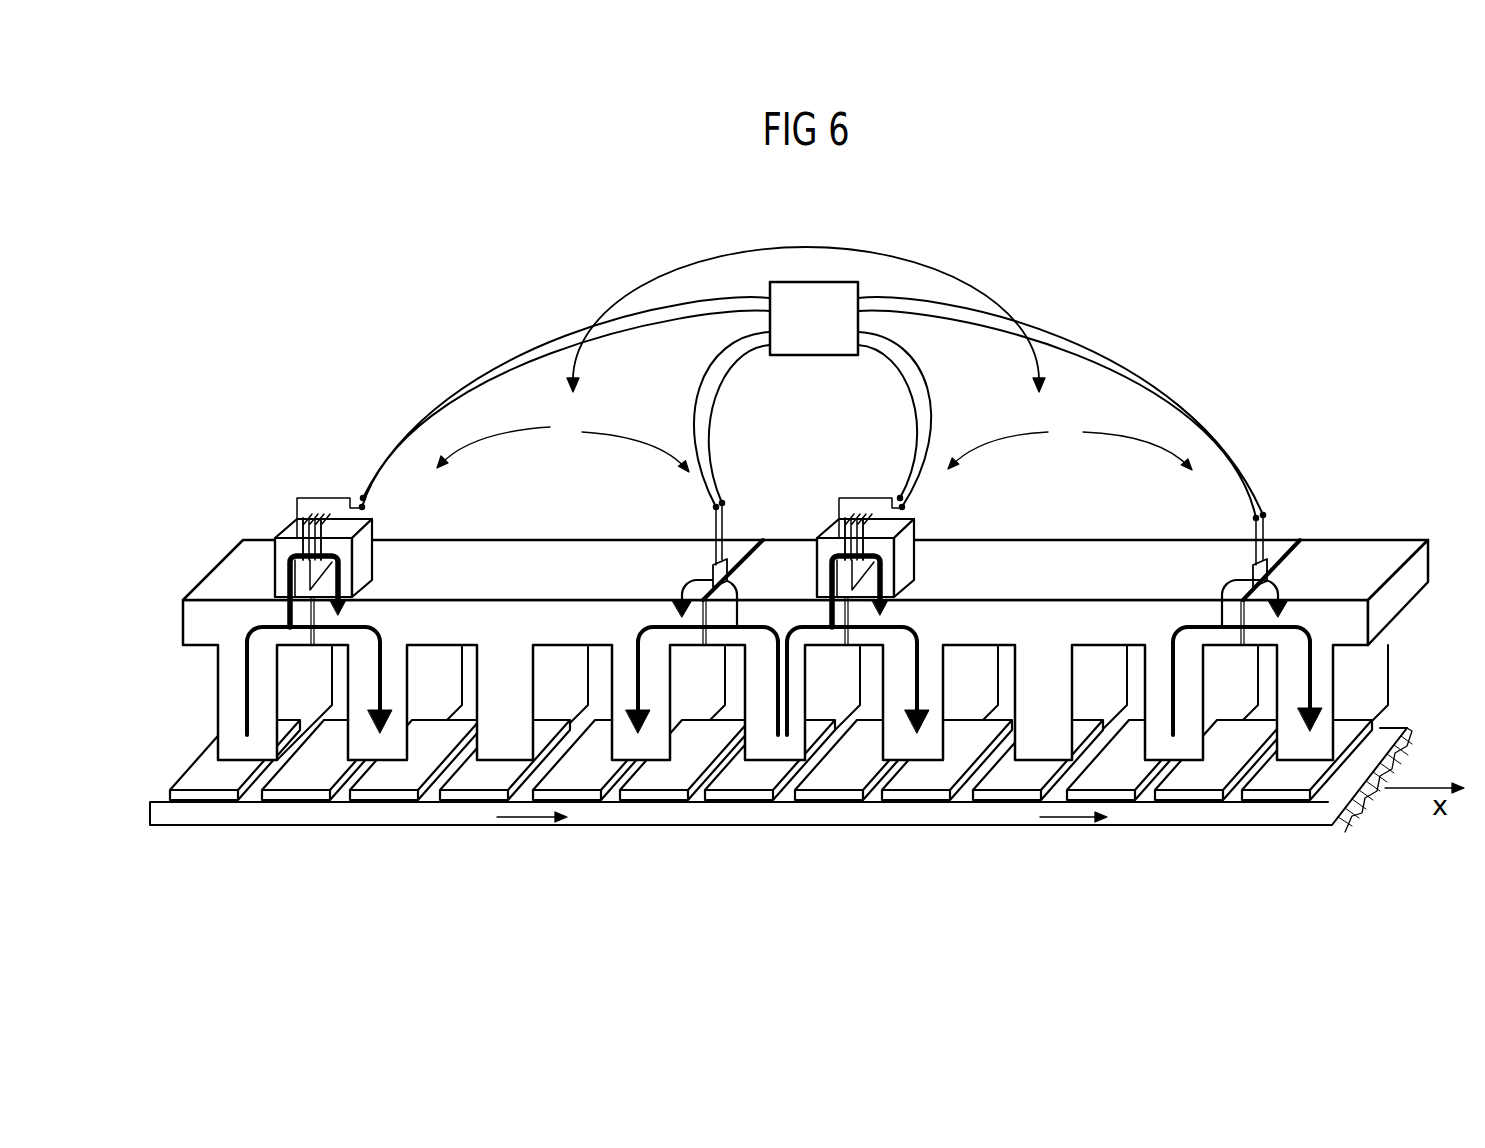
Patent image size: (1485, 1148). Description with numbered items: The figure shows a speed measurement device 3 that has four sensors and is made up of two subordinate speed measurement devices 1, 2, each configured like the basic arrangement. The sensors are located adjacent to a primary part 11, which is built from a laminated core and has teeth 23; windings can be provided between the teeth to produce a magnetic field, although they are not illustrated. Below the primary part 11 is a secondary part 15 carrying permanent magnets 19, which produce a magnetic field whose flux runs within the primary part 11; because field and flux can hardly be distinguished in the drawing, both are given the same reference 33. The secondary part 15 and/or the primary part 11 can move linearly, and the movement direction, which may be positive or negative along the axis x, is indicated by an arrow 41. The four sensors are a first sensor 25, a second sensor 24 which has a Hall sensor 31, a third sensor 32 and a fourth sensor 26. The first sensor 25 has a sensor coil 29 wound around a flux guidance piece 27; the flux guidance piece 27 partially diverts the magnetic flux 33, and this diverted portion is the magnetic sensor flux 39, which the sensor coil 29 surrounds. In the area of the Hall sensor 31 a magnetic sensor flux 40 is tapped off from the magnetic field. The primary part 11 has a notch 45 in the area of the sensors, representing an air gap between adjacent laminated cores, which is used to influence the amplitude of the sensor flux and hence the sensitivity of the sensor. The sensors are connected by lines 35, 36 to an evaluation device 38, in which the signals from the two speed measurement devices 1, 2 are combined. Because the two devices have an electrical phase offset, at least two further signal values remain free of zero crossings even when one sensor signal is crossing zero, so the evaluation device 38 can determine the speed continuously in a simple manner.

The speed measurement device 1 is at (552, 442).
The speed measurement device 2 is at (1055, 442).
The speed measurement device 3 is at (796, 262).
The primary part 11 is at (1384, 548).
The secondary part 15 is at (1348, 805).
The permanent magnets 19 is at (1282, 803).
The teeth 23 is at (1033, 753).
The second sensor 24 is at (742, 548).
The first sensor 25 is at (268, 492).
The fourth sensor 26 is at (813, 509).
The flux guidance piece 27 is at (822, 573).
The sensor coil 29 is at (870, 541).
The Hall sensor 31 is at (696, 565).
The third sensor 32 is at (1235, 555).
The magnetic flux 33 is at (1312, 693).
The signal line connection 35 is at (895, 479).
The signal line connection 36 is at (1279, 504).
The evaluation device 38 is at (812, 357).
The magnetic sensor flux 39 is at (823, 602).
The magnetic sensor flux 40 is at (1279, 590).
The arrow 41 is at (1066, 825).
The notch 45 is at (847, 633).